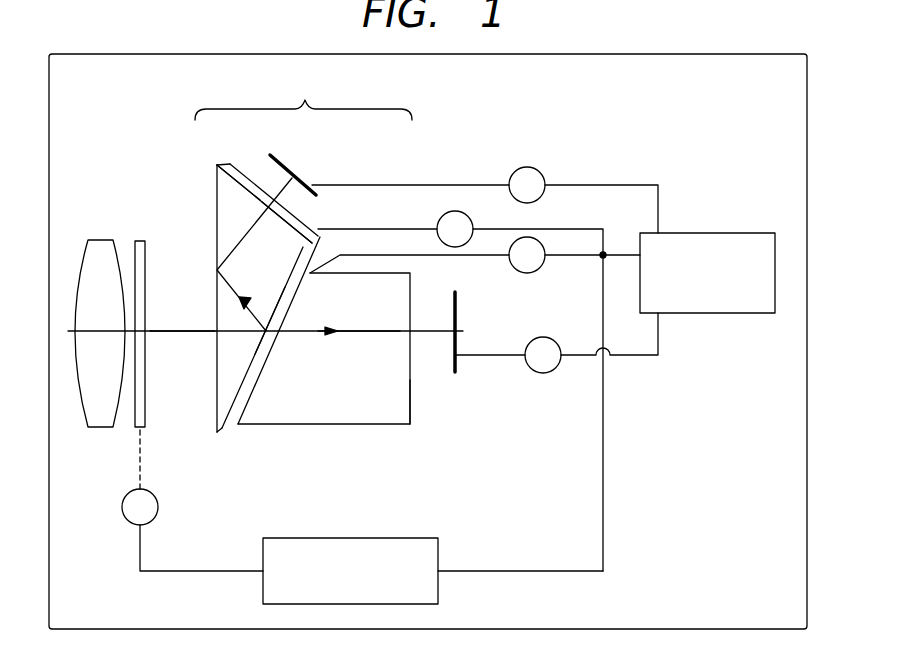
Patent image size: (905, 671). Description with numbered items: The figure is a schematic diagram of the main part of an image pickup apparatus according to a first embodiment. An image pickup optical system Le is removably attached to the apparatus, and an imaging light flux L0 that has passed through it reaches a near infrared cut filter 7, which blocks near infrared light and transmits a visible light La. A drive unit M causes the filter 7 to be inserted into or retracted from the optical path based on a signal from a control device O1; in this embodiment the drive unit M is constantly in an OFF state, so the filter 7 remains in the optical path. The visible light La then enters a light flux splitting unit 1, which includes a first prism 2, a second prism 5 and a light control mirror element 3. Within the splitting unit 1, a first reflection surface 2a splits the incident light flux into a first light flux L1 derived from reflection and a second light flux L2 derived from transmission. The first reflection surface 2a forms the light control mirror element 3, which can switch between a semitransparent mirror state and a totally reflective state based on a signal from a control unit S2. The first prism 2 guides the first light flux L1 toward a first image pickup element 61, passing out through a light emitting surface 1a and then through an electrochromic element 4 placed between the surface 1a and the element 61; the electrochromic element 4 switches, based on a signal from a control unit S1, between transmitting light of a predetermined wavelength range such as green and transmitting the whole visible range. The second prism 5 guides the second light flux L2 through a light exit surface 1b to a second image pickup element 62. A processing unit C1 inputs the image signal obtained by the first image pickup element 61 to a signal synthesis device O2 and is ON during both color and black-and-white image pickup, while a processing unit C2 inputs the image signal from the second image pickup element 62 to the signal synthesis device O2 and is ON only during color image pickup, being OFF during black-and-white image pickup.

The light flux splitting unit 1 is at (305, 100).
The light emitting surface 1a is at (247, 194).
The light exit surface 1b is at (413, 418).
The first prism 2 is at (217, 395).
The first reflection surface 2a is at (283, 292).
The light control mirror element 3 is at (248, 397).
The electrochromic element 4 is at (303, 226).
The second prism 5 is at (395, 390).
The near infrared cut filter 7 is at (139, 241).
The first image pickup element 61 is at (298, 177).
The second image pickup element 62 is at (460, 312).
The image pickup optical system Le is at (100, 240).
The visible light La is at (175, 338).
The imaging light flux L0 is at (126, 459).
The first light flux L1 is at (254, 254).
The second light flux L2 is at (359, 347).
The drive unit M is at (140, 507).
The processing unit C1 is at (485, 200).
The processing unit C2 is at (556, 343).
The control unit S1 is at (460, 391).
The control unit S2 is at (574, 255).
The control device O1 is at (352, 538).
The signal synthesis device O2 is at (708, 233).